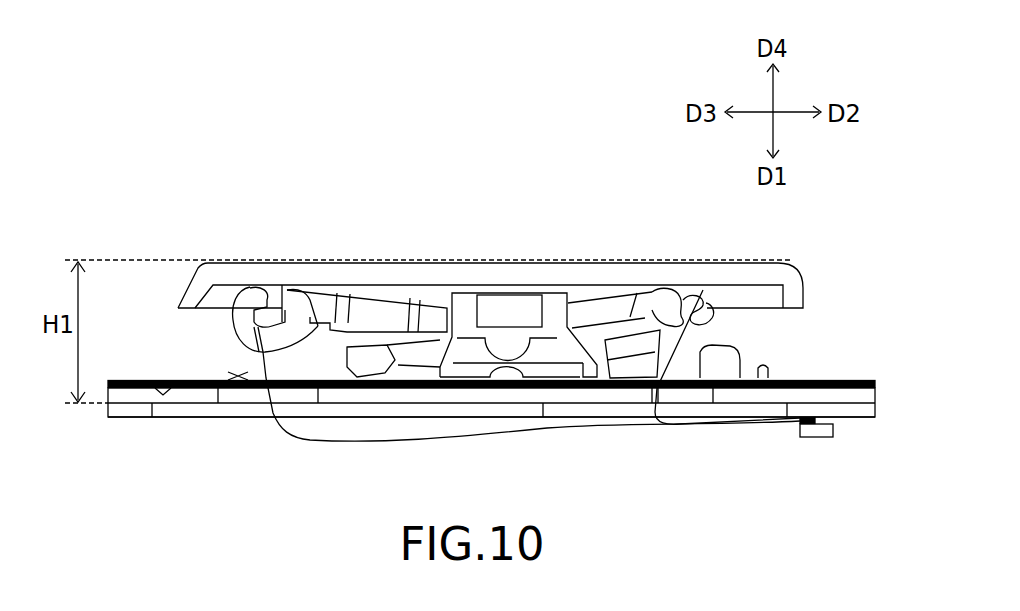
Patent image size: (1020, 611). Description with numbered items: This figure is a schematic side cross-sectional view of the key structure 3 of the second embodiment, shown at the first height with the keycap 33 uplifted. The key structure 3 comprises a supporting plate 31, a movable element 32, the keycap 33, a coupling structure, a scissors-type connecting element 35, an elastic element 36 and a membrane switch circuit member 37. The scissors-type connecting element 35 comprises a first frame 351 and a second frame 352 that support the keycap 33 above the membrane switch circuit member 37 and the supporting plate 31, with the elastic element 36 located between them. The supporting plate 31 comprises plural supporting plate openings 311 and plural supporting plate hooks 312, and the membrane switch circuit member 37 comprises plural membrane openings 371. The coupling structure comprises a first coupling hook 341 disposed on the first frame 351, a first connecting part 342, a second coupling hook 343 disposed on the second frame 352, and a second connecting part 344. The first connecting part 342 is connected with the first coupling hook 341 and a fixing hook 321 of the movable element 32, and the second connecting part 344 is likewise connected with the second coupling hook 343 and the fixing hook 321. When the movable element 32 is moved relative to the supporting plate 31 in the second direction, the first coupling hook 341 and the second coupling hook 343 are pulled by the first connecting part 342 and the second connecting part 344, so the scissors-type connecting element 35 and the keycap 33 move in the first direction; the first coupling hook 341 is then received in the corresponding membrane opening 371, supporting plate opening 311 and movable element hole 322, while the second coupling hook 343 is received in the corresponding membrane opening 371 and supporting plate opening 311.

The key structure 3 is at (213, 182).
The supporting plate 31 is at (161, 389).
The supporting plate opening 311 is at (252, 397).
The supporting plate hook 312 is at (763, 363).
The movable element 32 is at (856, 412).
The fixing hook 321 is at (817, 432).
The movable element hole 322 is at (200, 410).
The keycap 33 is at (666, 260).
The first coupling hook 341 is at (253, 292).
The first connecting part 342 is at (300, 432).
The second coupling hook 343 is at (698, 300).
The second connecting part 344 is at (678, 403).
The scissors-type connecting element 35 is at (394, 313).
The first frame 351 is at (363, 305).
The second frame 352 is at (415, 347).
The elastic element 36 is at (553, 305).
The membrane switch circuit member 37 is at (830, 380).
The membrane opening 371 is at (240, 380).